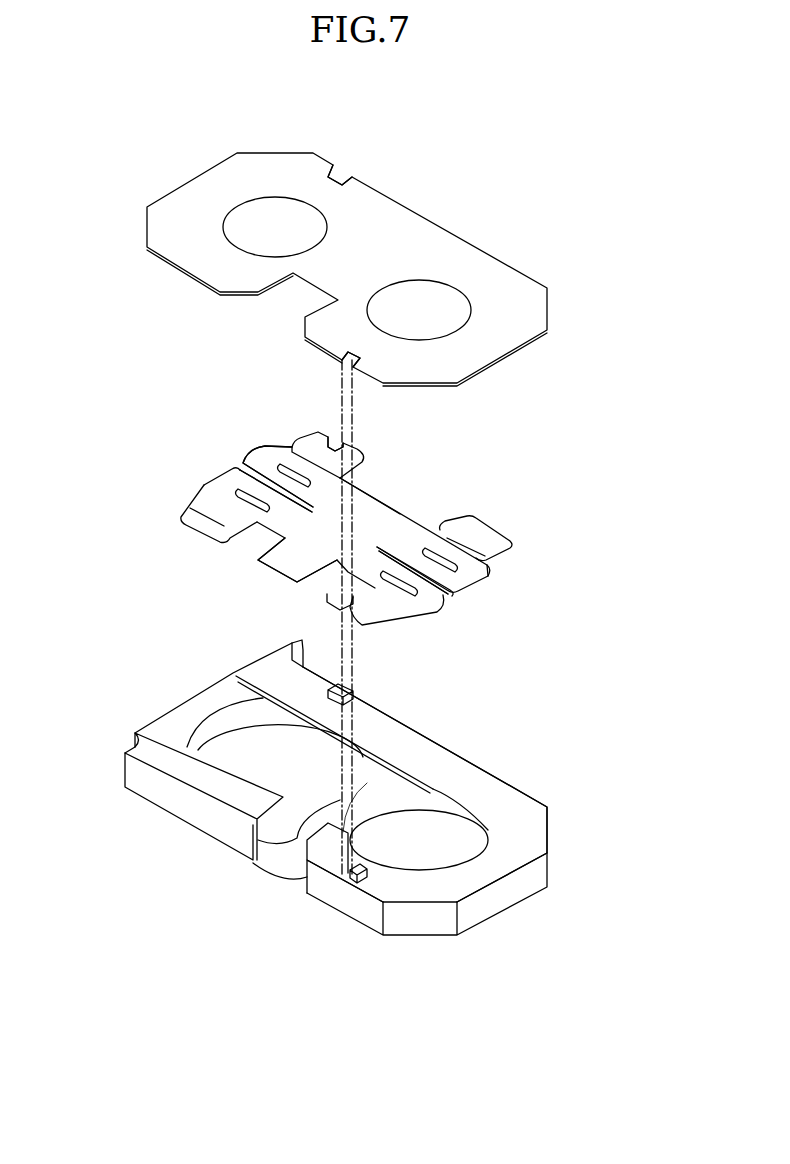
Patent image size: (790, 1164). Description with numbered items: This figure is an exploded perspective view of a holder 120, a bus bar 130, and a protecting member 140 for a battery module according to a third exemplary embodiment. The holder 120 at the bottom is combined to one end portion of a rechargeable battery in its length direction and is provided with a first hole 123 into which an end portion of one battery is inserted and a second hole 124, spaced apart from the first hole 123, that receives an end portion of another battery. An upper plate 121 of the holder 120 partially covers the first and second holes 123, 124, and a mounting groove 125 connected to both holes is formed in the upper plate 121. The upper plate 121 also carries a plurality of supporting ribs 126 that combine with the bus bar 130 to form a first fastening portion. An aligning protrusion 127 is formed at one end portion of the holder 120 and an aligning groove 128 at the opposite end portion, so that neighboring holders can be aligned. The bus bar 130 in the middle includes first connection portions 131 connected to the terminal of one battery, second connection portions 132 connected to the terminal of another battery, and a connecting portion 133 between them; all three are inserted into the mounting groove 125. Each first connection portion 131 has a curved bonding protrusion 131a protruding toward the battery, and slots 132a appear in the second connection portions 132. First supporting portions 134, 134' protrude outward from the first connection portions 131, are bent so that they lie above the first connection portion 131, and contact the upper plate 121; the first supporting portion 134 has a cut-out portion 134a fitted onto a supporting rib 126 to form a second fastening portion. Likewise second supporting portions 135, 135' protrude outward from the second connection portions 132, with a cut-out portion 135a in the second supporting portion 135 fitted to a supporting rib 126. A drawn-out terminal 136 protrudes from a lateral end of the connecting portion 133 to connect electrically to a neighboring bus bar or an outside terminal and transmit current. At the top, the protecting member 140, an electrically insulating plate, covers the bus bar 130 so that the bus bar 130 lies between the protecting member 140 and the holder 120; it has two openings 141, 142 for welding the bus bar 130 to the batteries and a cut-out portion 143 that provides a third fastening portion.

The holder 120 is at (560, 860).
The upper plate 121 is at (470, 770).
The first hole 123 is at (310, 815).
The second hole 124 is at (202, 718).
The mounting groove 125 is at (373, 773).
The supporting rib 126 is at (353, 690).
The aligning protrusion 127 is at (134, 744).
The aligning groove 128 is at (296, 641).
The bus bar 130 is at (396, 500).
The first connection portion 131 is at (427, 603).
The bonding protrusion 131a is at (433, 555).
The second connection portion 132 is at (225, 482).
The slots of branch portions 132a is at (285, 468).
The connecting portion 133 is at (348, 507).
The first supporting portion 134 is at (401, 610).
The first supporting portion 134' is at (504, 551).
The cut-out portion 134a is at (343, 605).
The second supporting portion 135 is at (313, 435).
The second supporting portion 135' is at (199, 504).
The cut-out portion 135a is at (335, 442).
The drawn-out terminal 136 is at (280, 560).
The protecting member 140 is at (432, 212).
The opening 141 is at (463, 293).
The opening 142 is at (275, 197).
The cut-out portion 143 is at (335, 166).